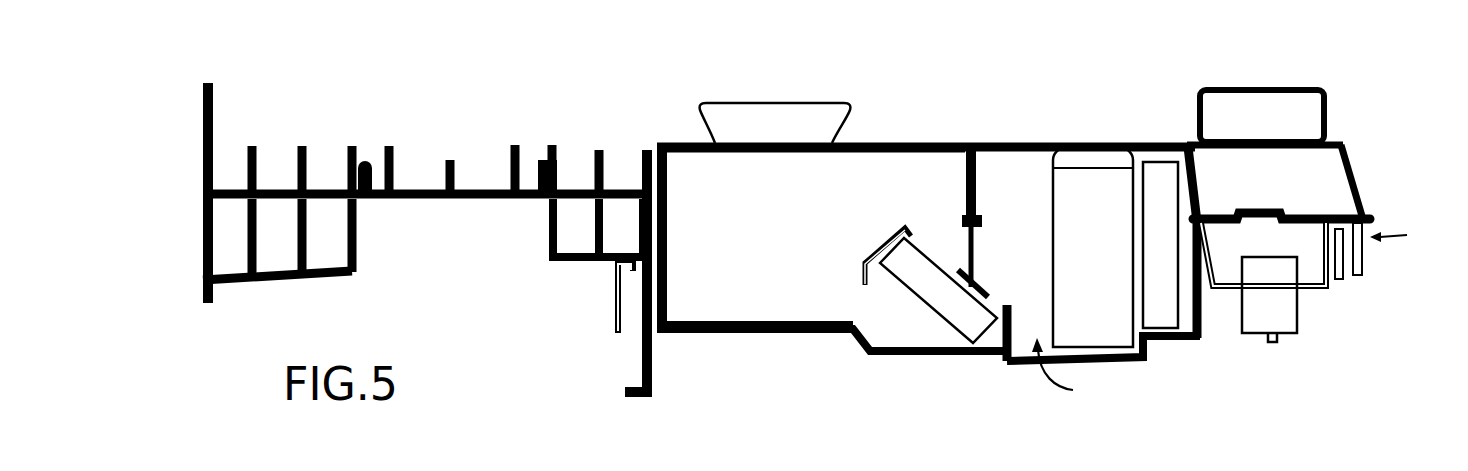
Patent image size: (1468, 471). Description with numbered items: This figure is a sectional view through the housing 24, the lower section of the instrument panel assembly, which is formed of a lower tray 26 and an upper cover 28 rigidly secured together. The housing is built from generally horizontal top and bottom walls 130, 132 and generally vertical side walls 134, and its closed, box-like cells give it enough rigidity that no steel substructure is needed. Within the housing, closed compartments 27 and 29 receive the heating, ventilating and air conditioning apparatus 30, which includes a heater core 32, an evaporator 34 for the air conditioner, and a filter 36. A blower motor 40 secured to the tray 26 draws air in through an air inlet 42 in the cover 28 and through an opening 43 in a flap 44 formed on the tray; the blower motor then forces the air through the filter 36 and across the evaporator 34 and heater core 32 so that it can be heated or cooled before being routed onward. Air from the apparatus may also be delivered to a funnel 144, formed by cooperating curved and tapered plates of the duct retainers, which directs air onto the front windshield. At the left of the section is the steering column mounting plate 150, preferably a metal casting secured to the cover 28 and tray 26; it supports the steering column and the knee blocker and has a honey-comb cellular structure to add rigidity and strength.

The housing 24 is at (1410, 231).
The lower tray 26 is at (742, 332).
The closed compartment 27 is at (787, 222).
The upper cover 28 is at (1347, 147).
The closed compartment 29 is at (1032, 202).
The heating, ventilating and air conditioning (HEVAC) apparatus 30 is at (1077, 370).
The heater core 32 is at (942, 305).
The evaporator 34 is at (1073, 178).
The filter 36 is at (1157, 173).
The blower motor 40 is at (1298, 312).
The air inlet 42 is at (1302, 87).
The opening 43 is at (1248, 212).
The flap 44 is at (1313, 215).
The top wall 130 is at (995, 142).
The bottom wall 132 is at (1172, 343).
The side wall 134 is at (660, 300).
The funnel 144 is at (793, 102).
The steering column mounting plate 150 is at (354, 256).